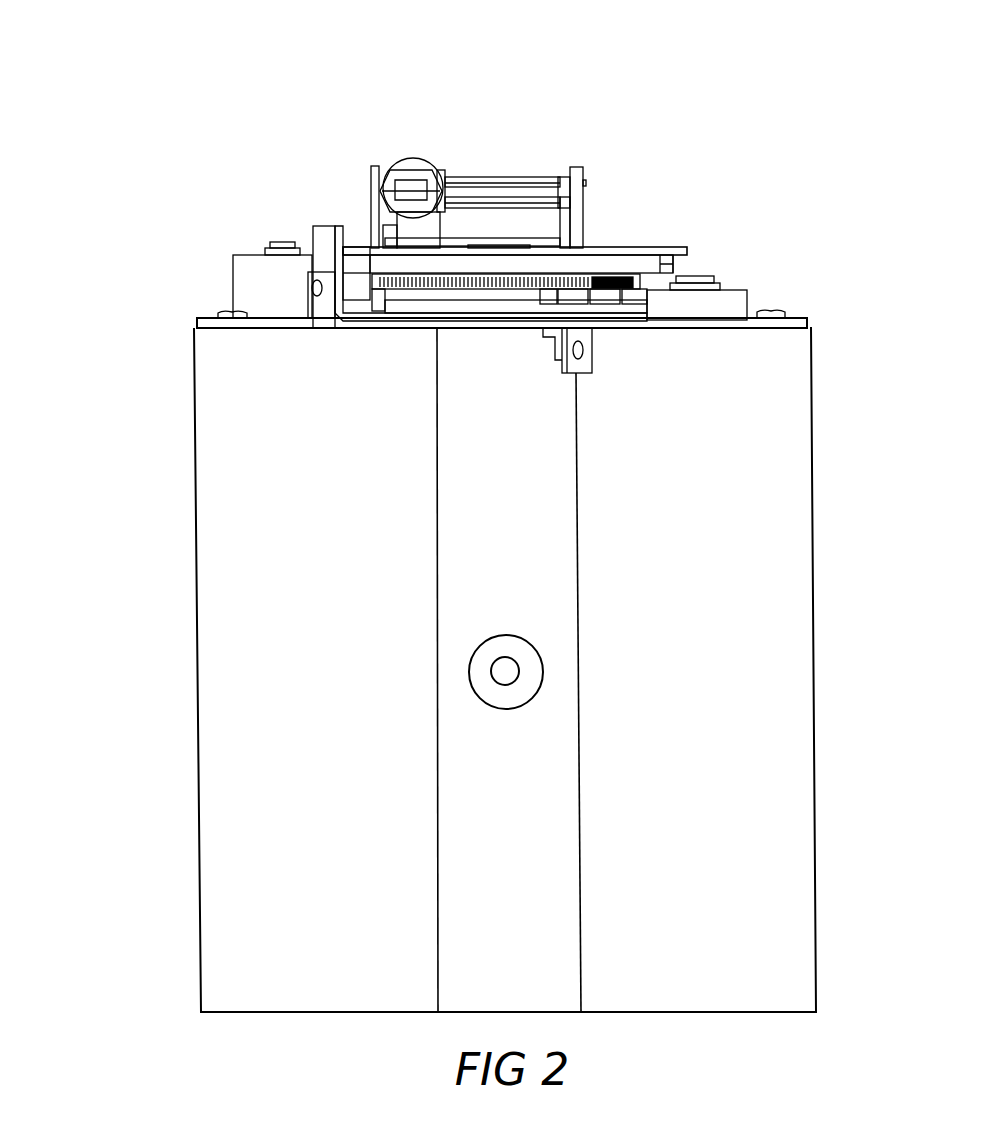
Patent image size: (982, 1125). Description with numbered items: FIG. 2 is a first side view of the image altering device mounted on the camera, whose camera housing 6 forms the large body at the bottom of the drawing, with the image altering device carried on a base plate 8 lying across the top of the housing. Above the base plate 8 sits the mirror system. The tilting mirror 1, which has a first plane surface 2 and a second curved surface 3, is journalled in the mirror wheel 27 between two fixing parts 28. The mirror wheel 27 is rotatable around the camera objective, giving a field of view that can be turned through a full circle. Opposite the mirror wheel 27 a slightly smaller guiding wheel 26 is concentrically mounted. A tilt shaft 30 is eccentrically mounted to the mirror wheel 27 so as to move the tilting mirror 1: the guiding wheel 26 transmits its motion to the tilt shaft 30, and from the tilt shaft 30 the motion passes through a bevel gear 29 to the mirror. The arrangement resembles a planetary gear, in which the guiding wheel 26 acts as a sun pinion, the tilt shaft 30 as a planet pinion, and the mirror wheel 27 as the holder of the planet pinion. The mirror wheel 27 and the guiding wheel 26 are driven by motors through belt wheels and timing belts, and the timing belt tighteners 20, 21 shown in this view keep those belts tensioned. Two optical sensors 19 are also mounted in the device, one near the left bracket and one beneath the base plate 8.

The tilting mirror 1 is at (525, 197).
The first plane surface 2 is at (503, 180).
The second curved surface 3 is at (572, 211).
The camera housing 6 is at (275, 685).
The base plate 8 is at (778, 323).
The optical sensor 19 is at (572, 338).
The timing belt tightener 20 is at (263, 285).
The timing belt tightener 21 is at (730, 303).
The guiding wheel 26 is at (410, 300).
The mirror wheel 27 is at (652, 267).
The fixing part 28 is at (573, 167).
The bevel gear 29 is at (435, 173).
The tilt shaft 30 is at (400, 187).